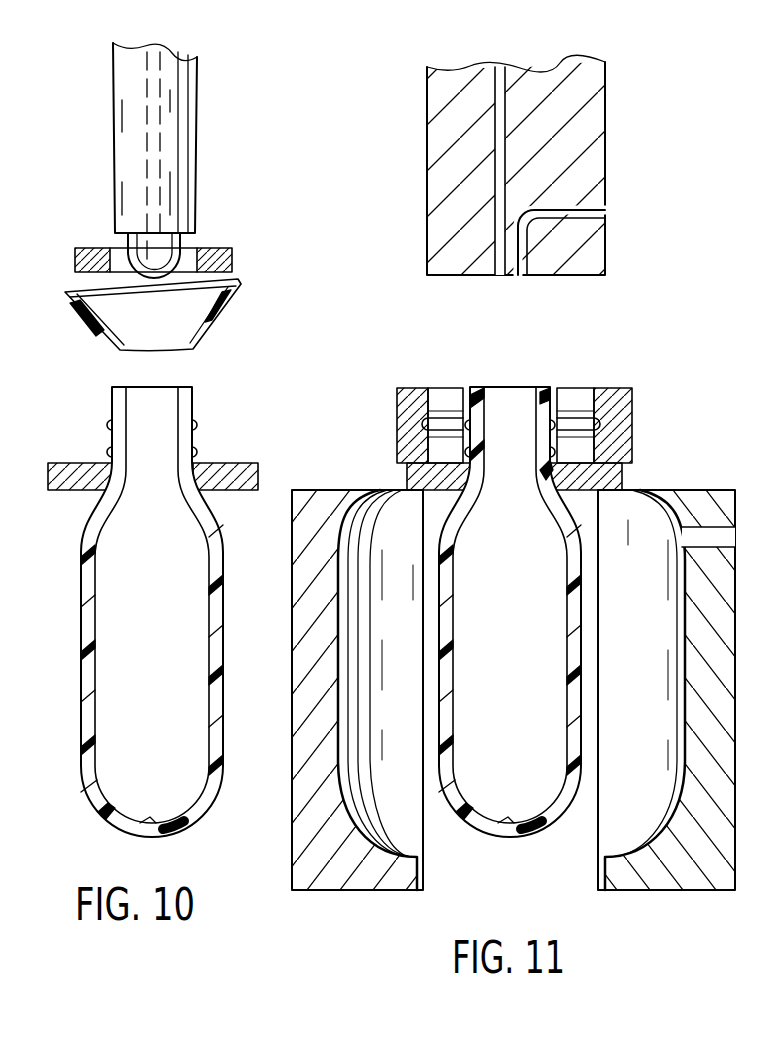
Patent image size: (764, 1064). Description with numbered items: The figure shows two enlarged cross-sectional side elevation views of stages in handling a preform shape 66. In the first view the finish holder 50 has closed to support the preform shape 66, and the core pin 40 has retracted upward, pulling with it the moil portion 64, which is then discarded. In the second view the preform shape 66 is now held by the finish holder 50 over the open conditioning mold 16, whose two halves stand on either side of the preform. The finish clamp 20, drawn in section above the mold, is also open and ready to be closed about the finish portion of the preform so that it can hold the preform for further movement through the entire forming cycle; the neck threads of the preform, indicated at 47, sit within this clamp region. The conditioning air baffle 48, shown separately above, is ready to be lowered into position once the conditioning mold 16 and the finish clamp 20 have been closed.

In FIG. 11, the conditioning mold 16 is at (655, 890).
In FIG. 11, the finish clamp 20 is at (632, 390).
In FIG. 10, the core pin 40 is at (197, 173).
In FIG. 11, the neck thread 47 is at (470, 412).
In FIG. 11, the conditioning air baffle 48 is at (605, 158).
In FIG. 10, the finish holder 50 is at (53, 445).
In FIG. 10, the moil portion 64 is at (228, 303).
In FIG. 10, the preform shape 66 is at (90, 800).
In FIG. 11, the preform shape 66 is at (494, 835).